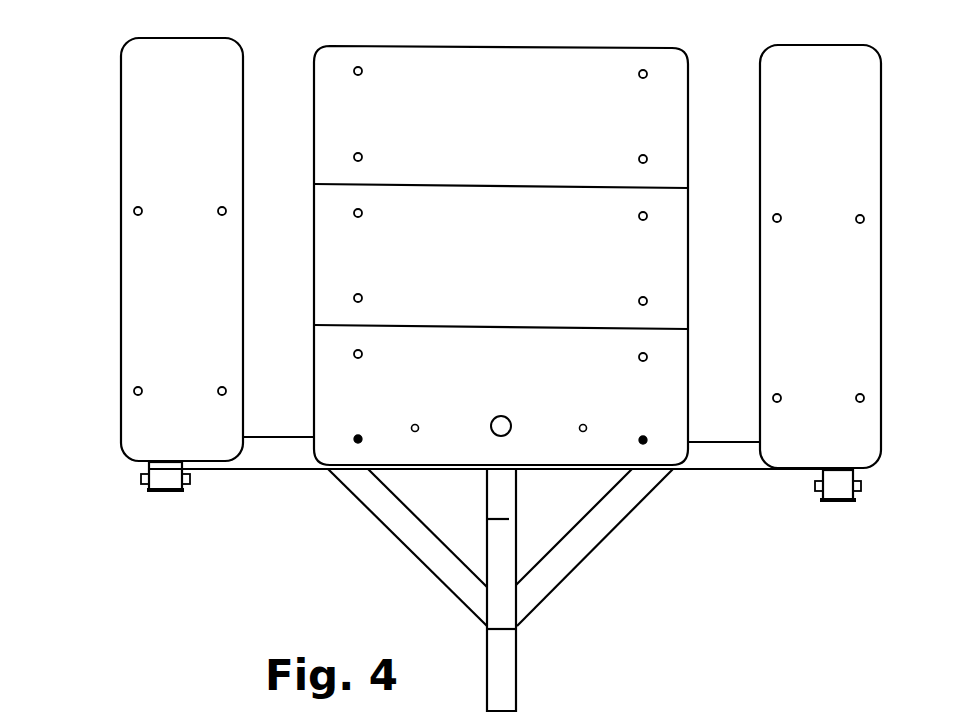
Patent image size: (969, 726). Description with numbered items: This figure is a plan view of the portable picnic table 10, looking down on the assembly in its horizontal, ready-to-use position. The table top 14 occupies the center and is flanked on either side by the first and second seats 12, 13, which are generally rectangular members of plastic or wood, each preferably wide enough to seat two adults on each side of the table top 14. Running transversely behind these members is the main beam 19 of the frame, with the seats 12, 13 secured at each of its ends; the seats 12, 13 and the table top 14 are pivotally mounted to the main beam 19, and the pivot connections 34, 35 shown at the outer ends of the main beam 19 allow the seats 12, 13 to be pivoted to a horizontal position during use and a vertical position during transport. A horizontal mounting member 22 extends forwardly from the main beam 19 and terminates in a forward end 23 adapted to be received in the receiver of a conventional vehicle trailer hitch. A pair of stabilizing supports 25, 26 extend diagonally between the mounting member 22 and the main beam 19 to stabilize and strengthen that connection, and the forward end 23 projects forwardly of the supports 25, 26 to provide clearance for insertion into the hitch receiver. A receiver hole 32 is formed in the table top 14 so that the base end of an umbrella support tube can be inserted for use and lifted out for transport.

The portable picnic table 10 is at (263, 573).
The first seat 12 is at (190, 155).
The second seat 13 is at (835, 166).
The table top 14 is at (509, 150).
The main beam 19 is at (285, 458).
The mounting member 22 is at (508, 550).
The forward end 23 is at (507, 680).
The stabilizing support 25 is at (405, 537).
The stabilizing support 26 is at (600, 528).
The receiver hole 32 is at (506, 416).
The pivot connection 34 is at (148, 486).
The pivot connection 35 is at (854, 492).